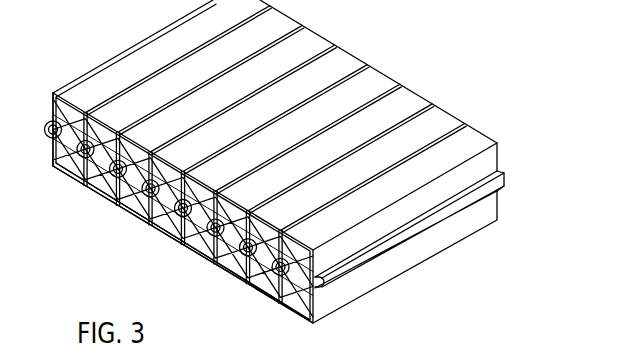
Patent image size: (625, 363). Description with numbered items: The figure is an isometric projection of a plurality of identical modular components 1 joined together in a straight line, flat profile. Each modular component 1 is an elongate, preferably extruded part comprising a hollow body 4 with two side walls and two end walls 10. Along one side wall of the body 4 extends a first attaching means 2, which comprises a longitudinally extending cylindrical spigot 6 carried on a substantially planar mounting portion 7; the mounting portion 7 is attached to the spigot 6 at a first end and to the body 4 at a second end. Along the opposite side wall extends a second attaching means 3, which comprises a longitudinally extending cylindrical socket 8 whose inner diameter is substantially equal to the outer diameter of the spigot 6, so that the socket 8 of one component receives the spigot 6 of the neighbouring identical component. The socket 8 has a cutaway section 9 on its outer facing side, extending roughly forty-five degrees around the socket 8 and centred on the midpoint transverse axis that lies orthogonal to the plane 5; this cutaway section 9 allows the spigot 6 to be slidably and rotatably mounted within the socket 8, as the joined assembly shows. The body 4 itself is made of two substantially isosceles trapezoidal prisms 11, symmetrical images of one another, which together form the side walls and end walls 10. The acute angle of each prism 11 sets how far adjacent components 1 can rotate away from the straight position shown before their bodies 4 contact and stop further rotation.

The modular component 1 is at (361, 47).
The first attaching means 2 is at (133, 210).
The second attaching means 3 is at (233, 270).
The elongate hollow body 4 is at (47, 160).
The plane 5 is at (171, 237).
The cylindrical spigot 6 is at (505, 183).
The mounting portion 7 is at (317, 307).
The cylindrical socket 8 is at (270, 282).
The cutaway section 9 is at (200, 240).
The end walls 10 is at (81, 231).
The isosceles trapezoidal prisms 11 is at (367, 235).